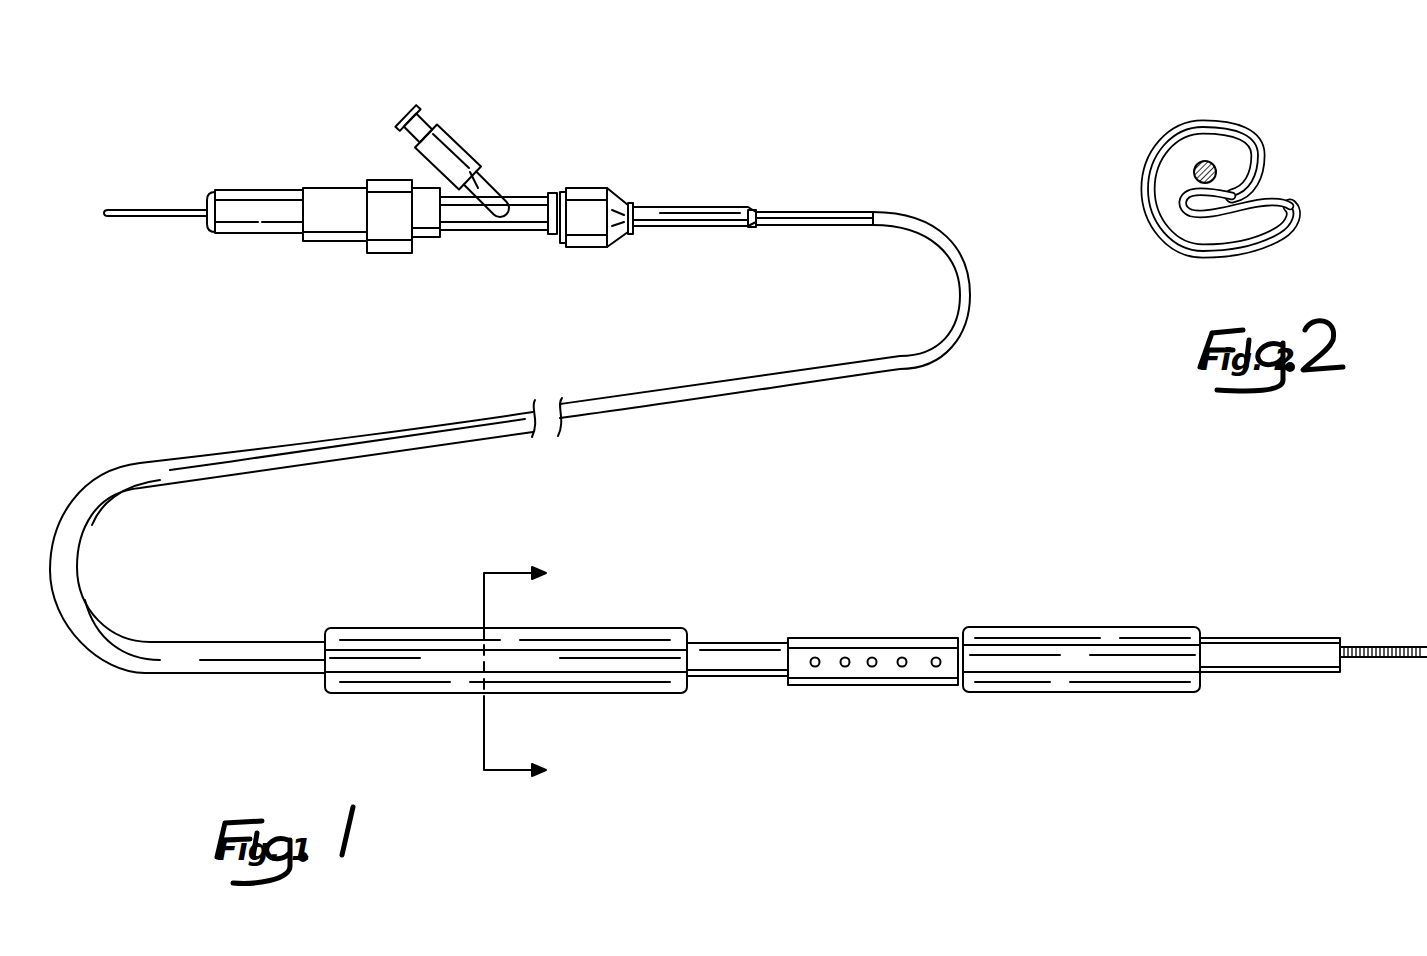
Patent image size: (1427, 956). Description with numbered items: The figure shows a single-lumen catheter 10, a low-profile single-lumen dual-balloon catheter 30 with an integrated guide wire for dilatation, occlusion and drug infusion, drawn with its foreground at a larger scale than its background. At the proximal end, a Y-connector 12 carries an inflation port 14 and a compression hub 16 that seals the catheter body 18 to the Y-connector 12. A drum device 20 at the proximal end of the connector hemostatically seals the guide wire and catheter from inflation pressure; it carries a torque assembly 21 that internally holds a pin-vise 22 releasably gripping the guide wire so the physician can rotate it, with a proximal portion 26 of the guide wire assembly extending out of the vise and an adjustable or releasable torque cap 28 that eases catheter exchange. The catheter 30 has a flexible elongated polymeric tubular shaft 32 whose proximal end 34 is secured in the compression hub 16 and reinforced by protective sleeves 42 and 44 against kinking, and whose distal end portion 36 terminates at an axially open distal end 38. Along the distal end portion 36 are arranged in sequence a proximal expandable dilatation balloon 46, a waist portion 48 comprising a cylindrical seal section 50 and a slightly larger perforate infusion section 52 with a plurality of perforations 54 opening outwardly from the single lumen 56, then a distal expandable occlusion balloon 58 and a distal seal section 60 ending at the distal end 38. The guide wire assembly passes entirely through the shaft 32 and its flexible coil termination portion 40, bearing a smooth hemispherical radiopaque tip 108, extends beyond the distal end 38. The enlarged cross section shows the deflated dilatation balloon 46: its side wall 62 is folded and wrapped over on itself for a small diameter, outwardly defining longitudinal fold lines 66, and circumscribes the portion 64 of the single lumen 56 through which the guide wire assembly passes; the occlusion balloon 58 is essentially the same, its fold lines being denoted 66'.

In FIG. 1, the single-lumen catheter 10 is at (889, 176).
In FIG. 1, the Y-connector 12 is at (500, 232).
In FIG. 1, the inflation port 14 is at (404, 107).
In FIG. 1, the compression hub 16 is at (600, 188).
In FIG. 1, the catheter body 18 is at (946, 243).
In FIG. 1, the drum device 20 is at (392, 250).
In FIG. 1, the torque assembly 21 is at (391, 112).
In FIG. 1, the pin-vise 22 is at (257, 234).
In FIG. 1, the proximal portion of the guide wire assembly 26 is at (150, 211).
In FIG. 1, the torque cap 28 is at (210, 231).
In FIG. 1, the low-profile single-lumen dual-balloon catheter 30 is at (818, 406).
In FIG. 1, the flexible elongated tubular shaft 32 is at (610, 398).
In FIG. 1, the proximal end of the shaft 34 is at (636, 188).
In FIG. 1, the distal end portion of the shaft 36 is at (856, 598).
In FIG. 1, the distal end 38 is at (1340, 638).
In FIG. 1, the flexible coil termination portion 40 is at (1376, 660).
In FIG. 1, the protective sleeve 42 is at (827, 210).
In FIG. 1, the protective sleeve 44 is at (735, 228).
In FIG. 1, the proximal expandable dilatation balloon 46 is at (656, 634).
In FIG. 2, the proximal expandable dilatation balloon 46 is at (1320, 199).
In FIG. 1, the waist portion 48 is at (793, 740).
In FIG. 1, the cylindrical seal section 50 is at (750, 650).
In FIG. 1, the perforate infusion section 52 is at (929, 638).
In FIG. 1, the perforation 54 is at (815, 668).
In FIG. 2, the single lumen 56 is at (1242, 158).
In FIG. 1, the distal expandable occlusion balloon 58 is at (1140, 628).
In FIG. 1, the distal seal section 60 is at (1283, 675).
In FIG. 2, the side wall 62 is at (1184, 130).
In FIG. 2, the portion of the single lumen 64 is at (1178, 173).
In FIG. 1, the longitudinal fold lines 66 is at (506, 627).
In FIG. 2, the longitudinal fold lines 66 is at (1283, 169).
In FIG. 1, the longitudinal fold lines 66' is at (1081, 698).
In FIG. 1, the radiopaque tip 108 is at (1426, 600).